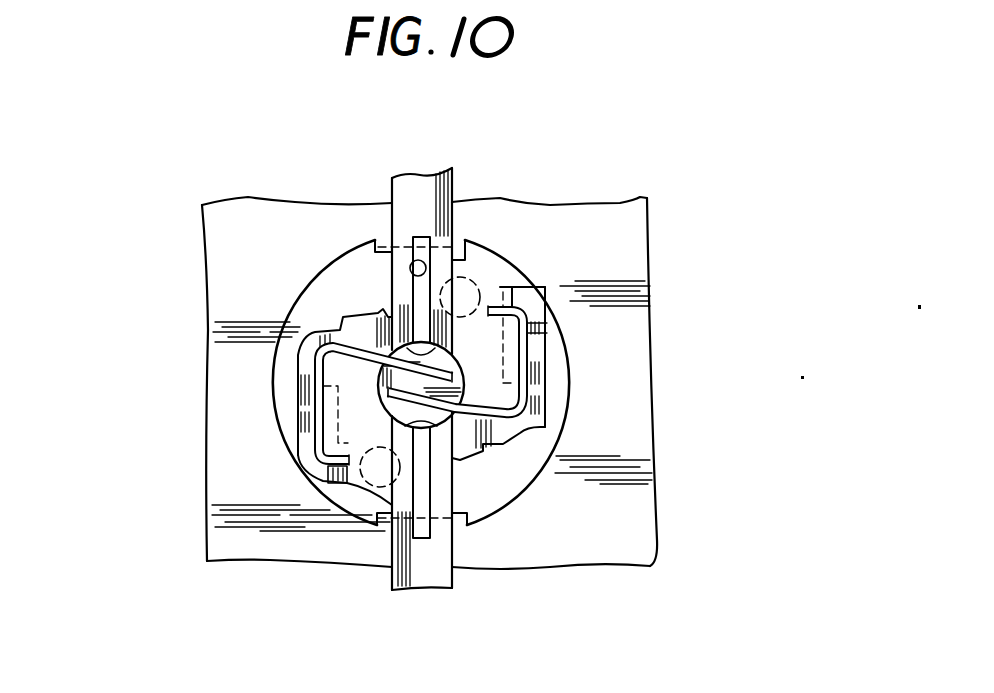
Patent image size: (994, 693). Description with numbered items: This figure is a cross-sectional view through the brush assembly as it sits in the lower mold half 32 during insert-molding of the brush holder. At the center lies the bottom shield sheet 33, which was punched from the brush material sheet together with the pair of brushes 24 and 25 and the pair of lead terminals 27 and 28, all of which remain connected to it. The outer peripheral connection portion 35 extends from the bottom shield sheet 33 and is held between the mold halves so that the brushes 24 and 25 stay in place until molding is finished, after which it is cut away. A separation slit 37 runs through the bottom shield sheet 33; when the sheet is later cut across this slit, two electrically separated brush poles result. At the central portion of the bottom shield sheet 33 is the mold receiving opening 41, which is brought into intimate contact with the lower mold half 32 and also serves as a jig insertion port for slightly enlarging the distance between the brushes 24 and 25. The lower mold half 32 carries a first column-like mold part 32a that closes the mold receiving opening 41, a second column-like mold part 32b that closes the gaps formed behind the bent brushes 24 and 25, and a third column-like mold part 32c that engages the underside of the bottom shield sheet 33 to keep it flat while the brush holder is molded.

The brush 24 is at (447, 362).
The brush 25 is at (398, 418).
The lead terminal 27 is at (332, 345).
The lead terminal 28 is at (480, 458).
The lower mold half 32 is at (632, 277).
The first column-like mold part 32a is at (548, 397).
The second column-like mold part 32b is at (318, 442).
The third column-like mold part 32c is at (480, 285).
The bottom shield sheet 33 is at (552, 433).
The outer peripheral connection portion 35 is at (425, 192).
The separation slit 37 is at (420, 267).
The mold receiving opening 41 is at (388, 320).